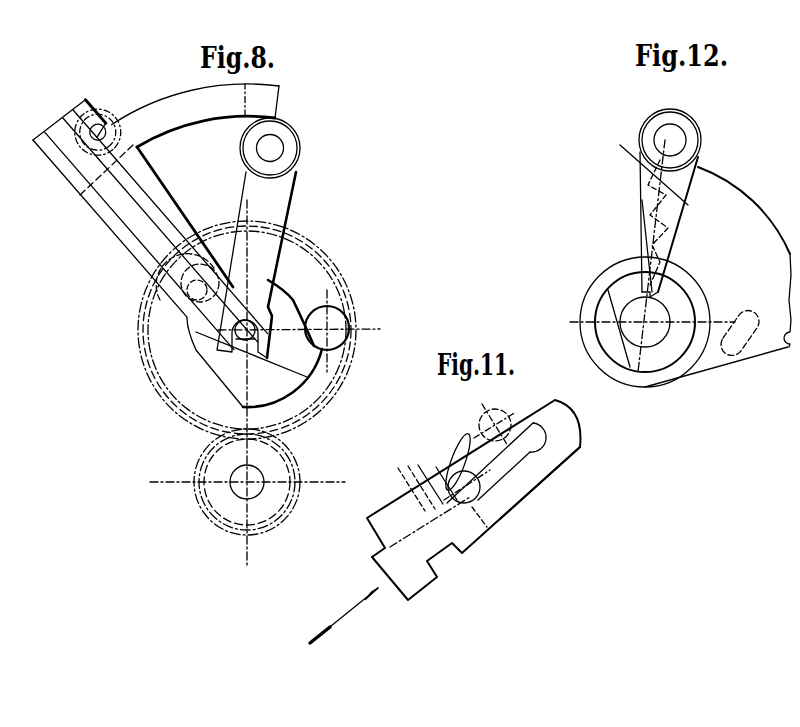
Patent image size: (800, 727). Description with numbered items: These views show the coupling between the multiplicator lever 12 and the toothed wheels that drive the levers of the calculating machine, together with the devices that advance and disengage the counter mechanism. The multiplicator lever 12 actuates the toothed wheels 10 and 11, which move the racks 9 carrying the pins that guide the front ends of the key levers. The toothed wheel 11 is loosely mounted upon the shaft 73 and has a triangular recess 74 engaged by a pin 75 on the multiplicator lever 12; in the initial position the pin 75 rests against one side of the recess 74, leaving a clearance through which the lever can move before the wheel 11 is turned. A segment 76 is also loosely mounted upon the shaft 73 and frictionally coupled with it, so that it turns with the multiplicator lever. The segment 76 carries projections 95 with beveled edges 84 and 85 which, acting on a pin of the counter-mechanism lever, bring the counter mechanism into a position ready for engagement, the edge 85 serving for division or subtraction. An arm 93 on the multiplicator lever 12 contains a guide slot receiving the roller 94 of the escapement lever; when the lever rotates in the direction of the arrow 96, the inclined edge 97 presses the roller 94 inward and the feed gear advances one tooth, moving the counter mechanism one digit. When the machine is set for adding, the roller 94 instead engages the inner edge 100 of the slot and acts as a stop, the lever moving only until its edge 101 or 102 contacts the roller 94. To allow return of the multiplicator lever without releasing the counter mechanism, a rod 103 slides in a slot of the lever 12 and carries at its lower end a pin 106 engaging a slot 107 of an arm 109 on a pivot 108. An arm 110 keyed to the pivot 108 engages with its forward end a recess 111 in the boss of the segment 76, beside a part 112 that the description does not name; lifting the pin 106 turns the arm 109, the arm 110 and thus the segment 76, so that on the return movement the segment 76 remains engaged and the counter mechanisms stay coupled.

In FIG. 8, the rack 9 is at (188, 114).
In FIG. 8, the toothed wheel 10 is at (206, 504).
In FIG. 8, the toothed wheel 11 is at (145, 352).
In FIG. 8, the multiplicator lever 12 is at (120, 233).
In FIG. 11, the multiplicator lever 12 is at (428, 580).
In FIG. 12, the shaft 73 is at (657, 338).
In FIG. 8, the triangular recess 74 is at (171, 289).
In FIG. 8, the pin 75 is at (197, 280).
In FIG. 12, the segment 76 is at (752, 212).
In FIG. 12, the beveled edge 84 is at (660, 238).
In FIG. 12, the beveled edge 85 is at (643, 169).
In FIG. 8, the arm 93 is at (272, 96).
In FIG. 11, the arm 93 is at (538, 481).
In FIG. 11, the roller 94 is at (466, 476).
In FIG. 12, the projection 95 is at (665, 222).
In FIG. 11, the arrow 96 is at (344, 615).
In FIG. 11, the inclined edge 97 is at (470, 438).
In FIG. 11, the inner edge 100 is at (490, 487).
In FIG. 11, the edge 101 is at (462, 501).
In FIG. 11, the edge 102 is at (537, 428).
In FIG. 8, the rod 103 is at (60, 142).
In FIG. 8, the pin 106 is at (245, 341).
In FIG. 8, the slot 107 is at (237, 339).
In FIG. 8, the pivot 108 is at (272, 148).
In FIG. 12, the pivot 108 is at (680, 142).
In FIG. 8, the arm 109 is at (275, 206).
In FIG. 12, the arm 110 is at (643, 184).
In FIG. 12, the recess 111 is at (660, 300).
In FIG. 12, the hub ring 112 is at (682, 305).